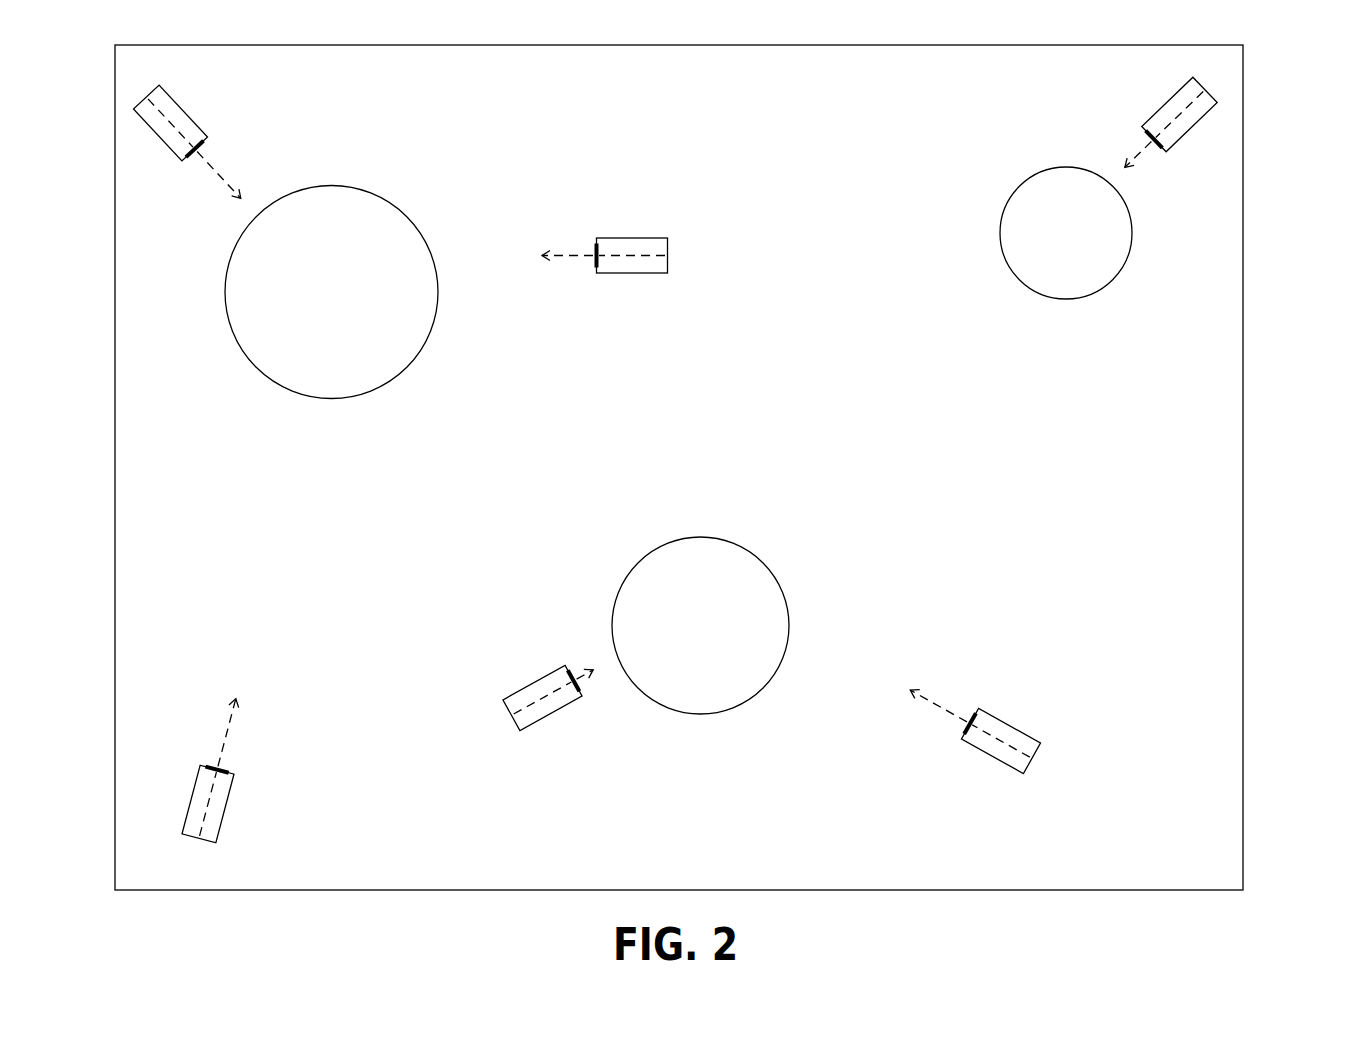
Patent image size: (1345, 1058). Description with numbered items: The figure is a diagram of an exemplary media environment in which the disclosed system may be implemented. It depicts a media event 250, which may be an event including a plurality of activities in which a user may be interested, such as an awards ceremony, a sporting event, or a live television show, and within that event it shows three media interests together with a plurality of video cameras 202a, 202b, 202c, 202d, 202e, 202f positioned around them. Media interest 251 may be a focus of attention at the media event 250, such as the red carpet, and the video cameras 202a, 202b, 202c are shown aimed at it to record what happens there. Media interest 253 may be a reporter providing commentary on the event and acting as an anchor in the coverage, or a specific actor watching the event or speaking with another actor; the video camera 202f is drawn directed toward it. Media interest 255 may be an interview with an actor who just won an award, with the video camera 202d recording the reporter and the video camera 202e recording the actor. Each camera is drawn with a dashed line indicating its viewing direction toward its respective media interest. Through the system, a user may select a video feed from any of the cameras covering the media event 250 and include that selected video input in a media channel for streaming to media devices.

The media event 250 is at (1243, 186).
The video camera 202a is at (197, 130).
The video camera 202b is at (647, 238).
The video camera 202c is at (225, 813).
The video camera 202d is at (530, 693).
The video camera 202e is at (1022, 728).
The video camera 202f is at (1152, 117).
The media interest 251 is at (331, 292).
The media interest 253 is at (1066, 233).
The media interest 255 is at (700, 625).